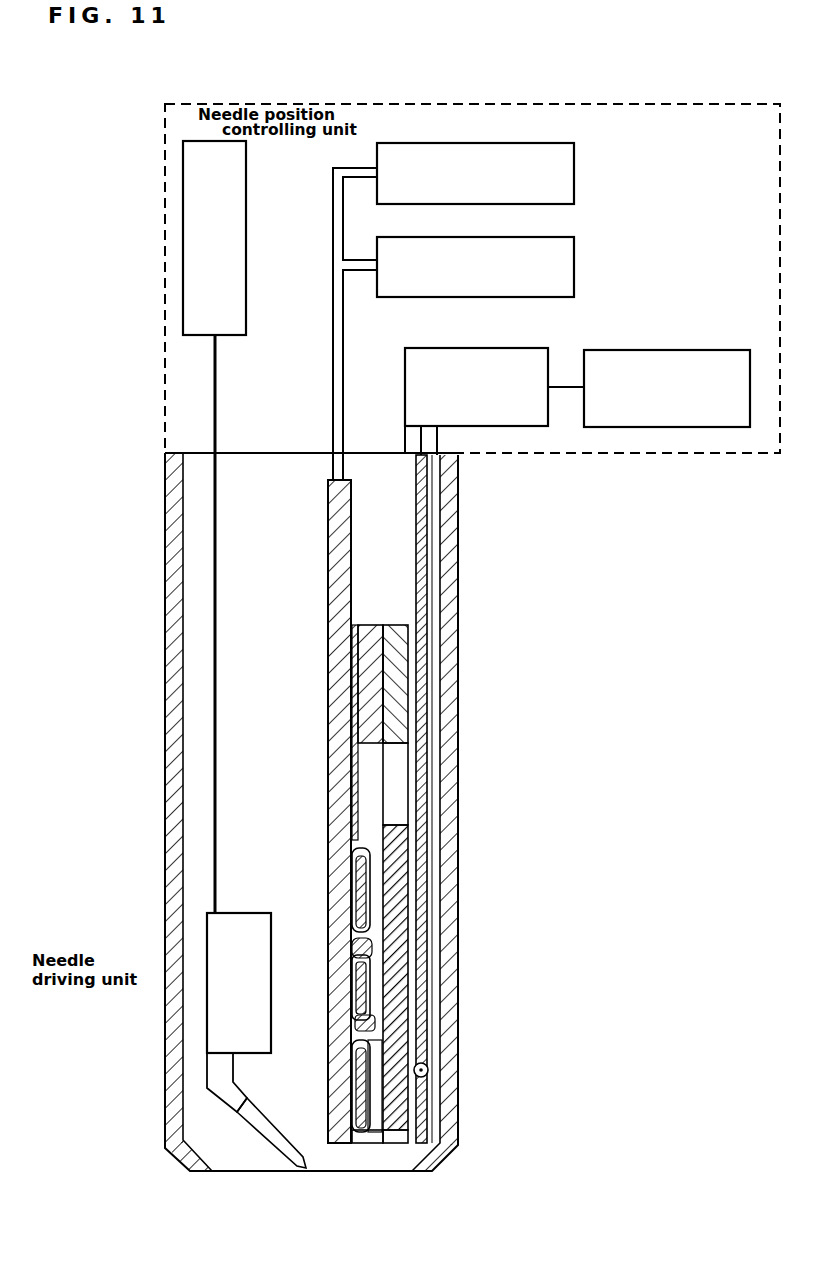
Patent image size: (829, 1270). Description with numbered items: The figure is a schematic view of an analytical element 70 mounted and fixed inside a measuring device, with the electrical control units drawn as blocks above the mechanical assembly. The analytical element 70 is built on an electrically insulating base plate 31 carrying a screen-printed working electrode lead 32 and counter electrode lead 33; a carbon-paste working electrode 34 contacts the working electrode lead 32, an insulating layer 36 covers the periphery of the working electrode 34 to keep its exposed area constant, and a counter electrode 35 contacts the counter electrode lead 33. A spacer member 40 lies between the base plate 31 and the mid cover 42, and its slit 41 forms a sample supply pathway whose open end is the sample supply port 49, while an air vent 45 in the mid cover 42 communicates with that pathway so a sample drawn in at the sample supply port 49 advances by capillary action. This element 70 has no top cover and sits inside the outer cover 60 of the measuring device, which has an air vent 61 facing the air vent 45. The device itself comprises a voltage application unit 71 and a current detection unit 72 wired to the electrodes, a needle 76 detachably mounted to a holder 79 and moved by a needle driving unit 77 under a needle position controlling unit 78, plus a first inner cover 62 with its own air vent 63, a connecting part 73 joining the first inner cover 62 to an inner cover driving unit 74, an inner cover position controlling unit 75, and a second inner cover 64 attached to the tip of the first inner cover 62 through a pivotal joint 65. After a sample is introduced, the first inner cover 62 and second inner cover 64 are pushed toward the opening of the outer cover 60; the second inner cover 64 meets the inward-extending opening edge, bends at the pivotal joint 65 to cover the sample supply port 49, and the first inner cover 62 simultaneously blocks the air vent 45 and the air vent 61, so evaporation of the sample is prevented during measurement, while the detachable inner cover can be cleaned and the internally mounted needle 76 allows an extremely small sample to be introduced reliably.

The base plate 31 is at (338, 512).
The working electrode lead 32 is at (360, 978).
The counter electrode lead 33 is at (352, 880).
The working electrode 34 is at (367, 962).
The counter electrode 35 is at (355, 850).
The insulating layer 36 is at (355, 632).
The spacer member 40 is at (370, 680).
The slit 41 is at (373, 768).
The mid cover 42 is at (400, 690).
The air vent 45 is at (397, 778).
The sample supply port 49 is at (370, 1145).
The outer cover 60 is at (175, 562).
The air vent 61 is at (447, 810).
The first inner cover 62 is at (423, 625).
The air vent 63 is at (420, 787).
The second inner cover 64 is at (367, 1107).
The pivotal joint 65 is at (429, 1070).
The analytical element 70 is at (252, 694).
The voltage application unit 71 is at (576, 168).
The current detection unit 72 is at (576, 262).
The connecting part 73 is at (430, 445).
The inner cover driving unit 74 is at (540, 348).
The inner cover position controlling unit 75 is at (712, 350).
The needle 76 is at (265, 1135).
The needle driving unit 77 is at (207, 950).
The needle position controlling unit 78 is at (246, 175).
The holder 79 is at (207, 1068).